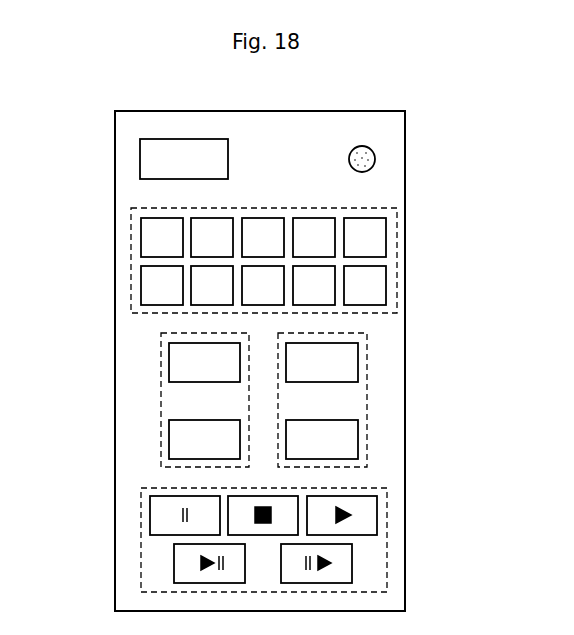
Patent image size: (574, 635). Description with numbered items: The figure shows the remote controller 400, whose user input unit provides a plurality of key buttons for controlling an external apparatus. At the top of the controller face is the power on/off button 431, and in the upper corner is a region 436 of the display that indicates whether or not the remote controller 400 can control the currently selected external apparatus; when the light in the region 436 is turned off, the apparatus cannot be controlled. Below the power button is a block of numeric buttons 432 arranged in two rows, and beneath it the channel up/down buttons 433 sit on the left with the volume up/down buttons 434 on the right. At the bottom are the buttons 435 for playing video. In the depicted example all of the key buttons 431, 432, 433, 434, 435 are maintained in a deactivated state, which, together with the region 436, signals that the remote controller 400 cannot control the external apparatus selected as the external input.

The remote controller 400 is at (405, 163).
The power on/off button 431 is at (140, 160).
The numeric buttons 432 is at (131, 247).
The channel up/down buttons 433 is at (161, 397).
The volume up/down buttons 434 is at (367, 393).
The buttons for playing video 435 is at (141, 532).
The region 436 is at (362, 147).